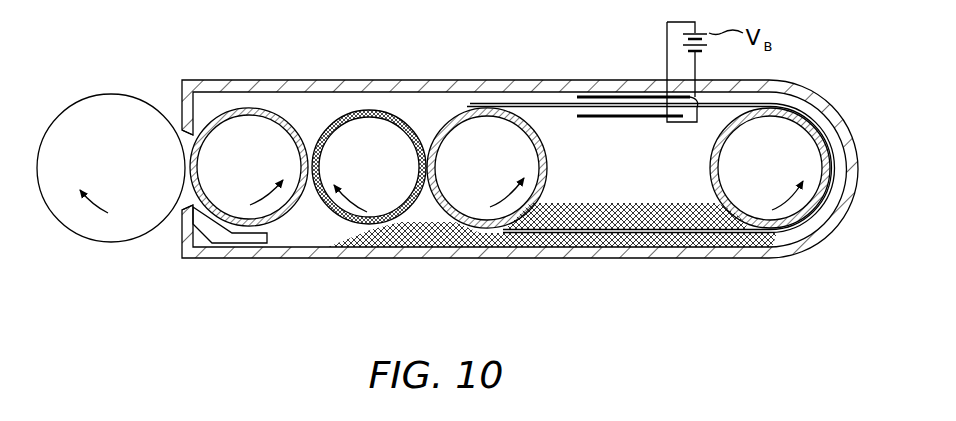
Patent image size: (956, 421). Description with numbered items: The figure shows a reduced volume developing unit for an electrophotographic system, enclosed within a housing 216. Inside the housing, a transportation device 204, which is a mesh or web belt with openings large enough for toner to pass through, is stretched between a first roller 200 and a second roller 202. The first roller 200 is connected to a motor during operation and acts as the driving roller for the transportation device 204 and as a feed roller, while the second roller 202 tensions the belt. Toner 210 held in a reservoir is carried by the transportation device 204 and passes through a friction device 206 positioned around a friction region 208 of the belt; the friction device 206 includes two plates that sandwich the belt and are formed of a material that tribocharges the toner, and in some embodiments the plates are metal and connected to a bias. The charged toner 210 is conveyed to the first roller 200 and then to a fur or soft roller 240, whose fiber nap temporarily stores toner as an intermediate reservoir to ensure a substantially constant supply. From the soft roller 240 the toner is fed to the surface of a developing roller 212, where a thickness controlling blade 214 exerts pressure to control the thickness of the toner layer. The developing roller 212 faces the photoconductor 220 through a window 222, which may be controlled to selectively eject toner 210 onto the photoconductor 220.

The first roller 200 is at (467, 227).
The second roller 202 is at (820, 197).
The transportation device 204 is at (681, 234).
The friction device 206 is at (622, 97).
The friction region 208 is at (570, 95).
The toner 210 is at (733, 252).
The developing roller 212 is at (271, 110).
The thickness controlling blade 214 is at (231, 240).
The housing 216 is at (218, 83).
The photoconductor 220 is at (89, 123).
The window 222 is at (187, 199).
The soft roller 240 is at (350, 110).